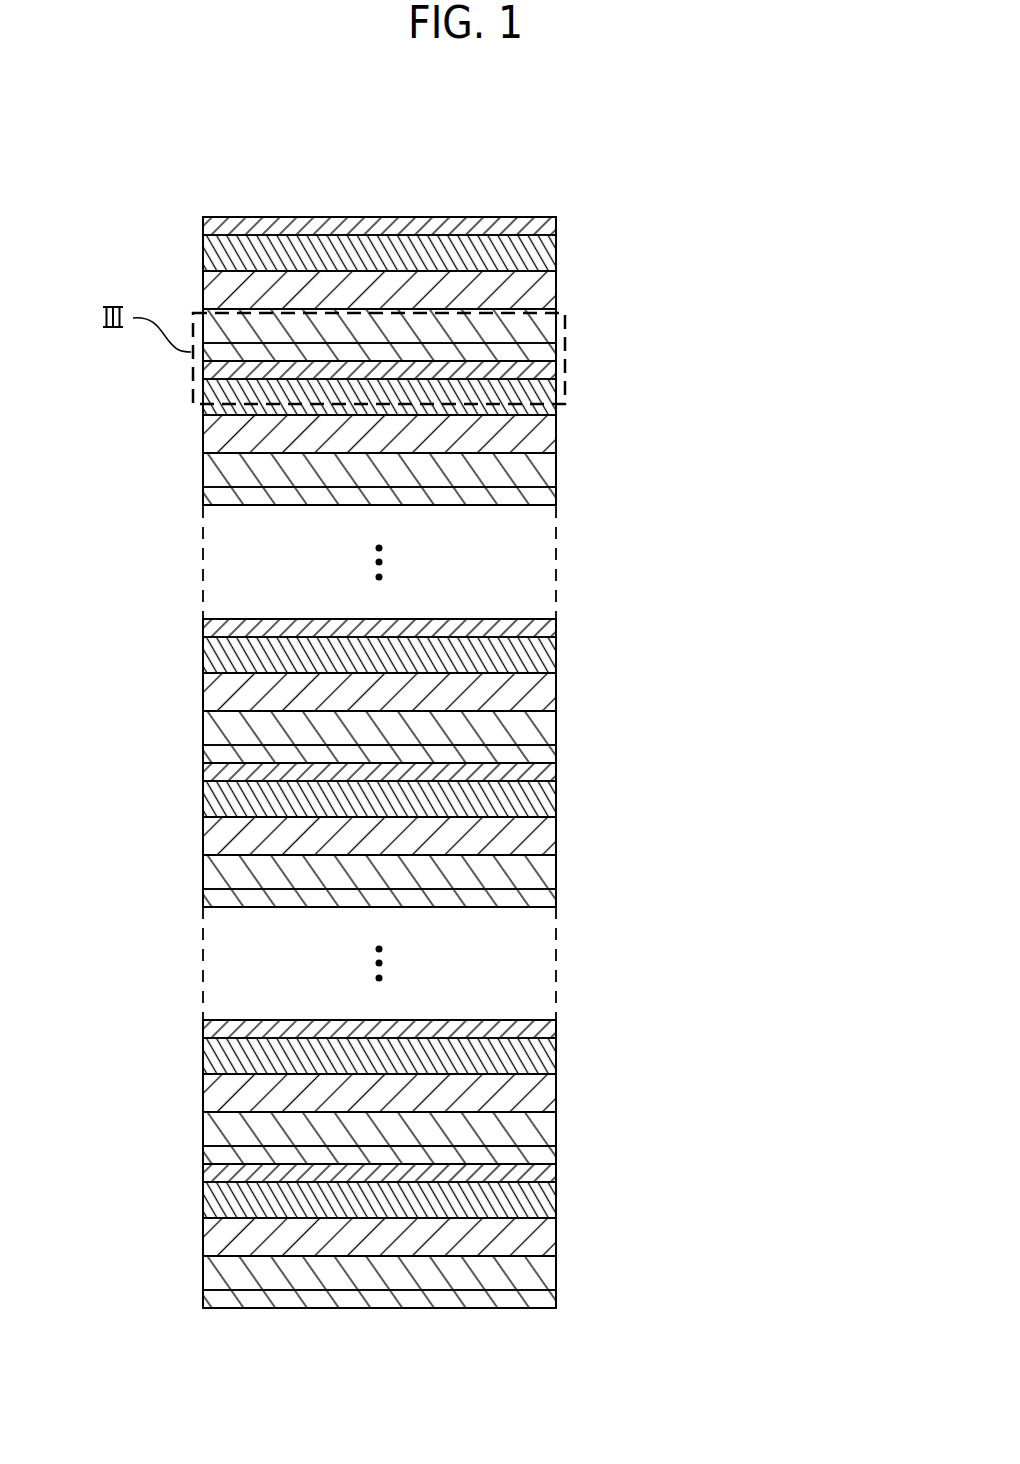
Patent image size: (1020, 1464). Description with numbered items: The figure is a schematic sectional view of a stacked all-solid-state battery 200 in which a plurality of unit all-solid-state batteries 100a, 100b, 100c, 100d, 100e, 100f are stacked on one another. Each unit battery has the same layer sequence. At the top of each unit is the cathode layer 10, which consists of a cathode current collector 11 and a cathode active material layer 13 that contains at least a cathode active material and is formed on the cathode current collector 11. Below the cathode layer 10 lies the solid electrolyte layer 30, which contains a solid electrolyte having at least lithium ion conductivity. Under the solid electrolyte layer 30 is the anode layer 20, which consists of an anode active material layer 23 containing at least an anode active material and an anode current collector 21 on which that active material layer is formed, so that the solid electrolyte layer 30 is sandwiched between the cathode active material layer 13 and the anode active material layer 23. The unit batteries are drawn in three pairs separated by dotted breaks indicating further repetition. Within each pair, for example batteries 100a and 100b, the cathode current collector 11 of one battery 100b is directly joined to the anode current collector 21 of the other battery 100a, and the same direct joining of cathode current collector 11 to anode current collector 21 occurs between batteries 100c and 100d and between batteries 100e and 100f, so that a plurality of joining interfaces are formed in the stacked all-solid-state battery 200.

The stacked all-solid-state battery 200 is at (462, 178).
The all-solid-state battery 100a is at (486, 278).
The all-solid-state battery 100b is at (486, 457).
The all-solid-state battery 100c is at (486, 680).
The all-solid-state battery 100d is at (486, 859).
The all-solid-state battery 100e is at (486, 1081).
The all-solid-state battery 100f is at (487, 1260).
The cathode layer 10 is at (439, 721).
The cathode current collector 11 is at (412, 701).
The cathode active material layer 13 is at (411, 738).
The solid electrolyte layer 30 is at (439, 772).
The anode layer 20 is at (439, 825).
The anode active material layer 23 is at (411, 803).
The anode current collector 21 is at (411, 841).